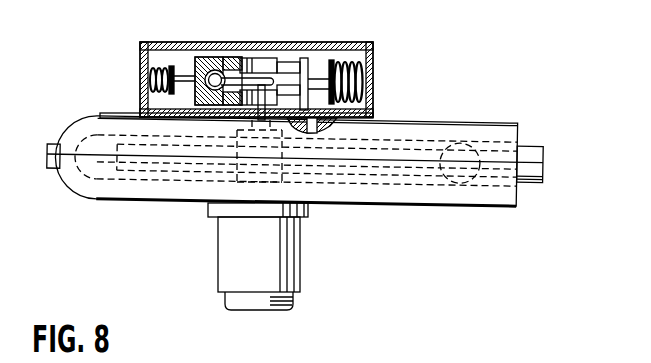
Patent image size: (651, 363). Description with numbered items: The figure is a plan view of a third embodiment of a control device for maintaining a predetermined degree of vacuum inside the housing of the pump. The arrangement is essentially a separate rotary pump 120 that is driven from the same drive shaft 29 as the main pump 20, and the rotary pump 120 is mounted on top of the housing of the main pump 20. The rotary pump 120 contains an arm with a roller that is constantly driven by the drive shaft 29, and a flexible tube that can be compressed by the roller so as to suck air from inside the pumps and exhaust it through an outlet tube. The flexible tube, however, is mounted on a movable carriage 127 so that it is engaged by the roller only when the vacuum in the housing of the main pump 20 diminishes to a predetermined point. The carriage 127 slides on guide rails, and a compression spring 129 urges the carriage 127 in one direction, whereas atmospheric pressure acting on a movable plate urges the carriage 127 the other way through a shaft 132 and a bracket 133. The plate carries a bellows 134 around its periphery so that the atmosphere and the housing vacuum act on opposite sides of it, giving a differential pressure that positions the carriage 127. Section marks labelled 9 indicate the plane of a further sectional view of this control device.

The section line 9- 9 is at (93, 77).
The main pump 20 is at (163, 203).
The drive shaft 29 is at (308, 201).
The rotary pump 120 is at (228, 42).
The carriage 127 is at (200, 57).
The compression spring 129 is at (161, 78).
The shaft 132 is at (322, 79).
The bracket 133 is at (310, 58).
The bellows 134 is at (372, 57).